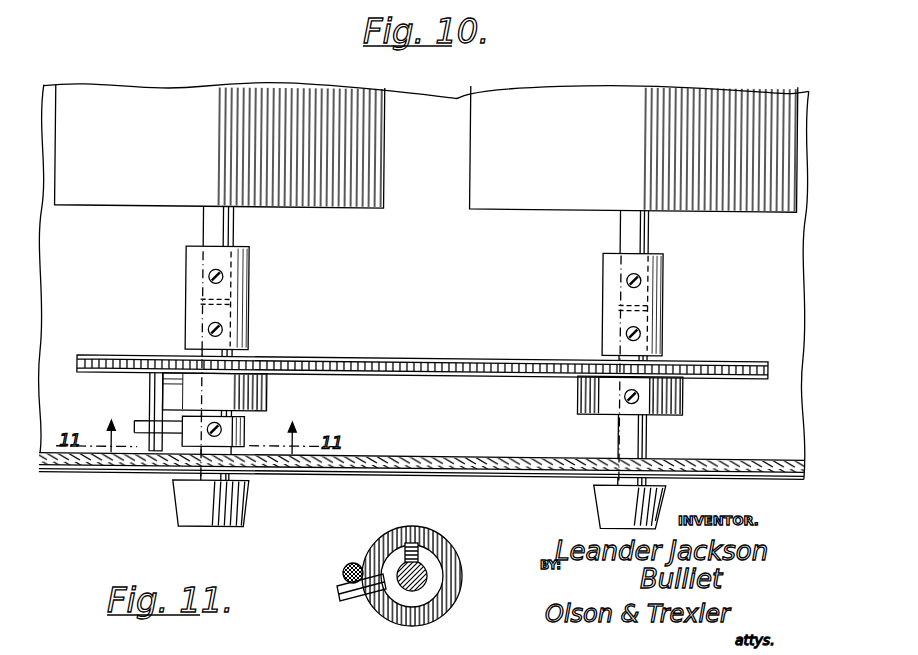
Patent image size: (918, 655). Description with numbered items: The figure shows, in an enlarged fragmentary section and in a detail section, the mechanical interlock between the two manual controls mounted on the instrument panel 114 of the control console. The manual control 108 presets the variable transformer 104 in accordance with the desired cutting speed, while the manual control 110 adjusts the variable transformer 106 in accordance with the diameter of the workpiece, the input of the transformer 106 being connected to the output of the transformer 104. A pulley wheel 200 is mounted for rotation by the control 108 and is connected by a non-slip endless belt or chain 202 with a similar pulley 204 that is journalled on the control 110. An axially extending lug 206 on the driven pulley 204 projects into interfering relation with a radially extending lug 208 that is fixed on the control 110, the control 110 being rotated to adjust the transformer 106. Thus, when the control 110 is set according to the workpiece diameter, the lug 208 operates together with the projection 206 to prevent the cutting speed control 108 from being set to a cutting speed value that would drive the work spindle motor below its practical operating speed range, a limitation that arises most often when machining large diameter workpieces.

In FIG. 10, the transformer 104 is at (528, 236).
In FIG. 10, the transformer 106 is at (325, 196).
In FIG. 10, the manual control 108 is at (578, 508).
In FIG. 10, the manual control 110 is at (185, 520).
In FIG. 11, the manual control 110 is at (416, 560).
In FIG. 10, the instrument panel 114 is at (415, 474).
In FIG. 10, the pulley wheel 200 is at (722, 355).
In FIG. 10, the non-slip endless belt or chain 202 is at (412, 355).
In FIG. 10, the pulley 204 is at (277, 373).
In FIG. 10, the axially extending lug 206 is at (150, 405).
In FIG. 11, the axially extending lug 206 is at (351, 563).
In FIG. 10, the radially extending lug 208 is at (176, 445).
In FIG. 11, the radially extending lug 208 is at (358, 599).